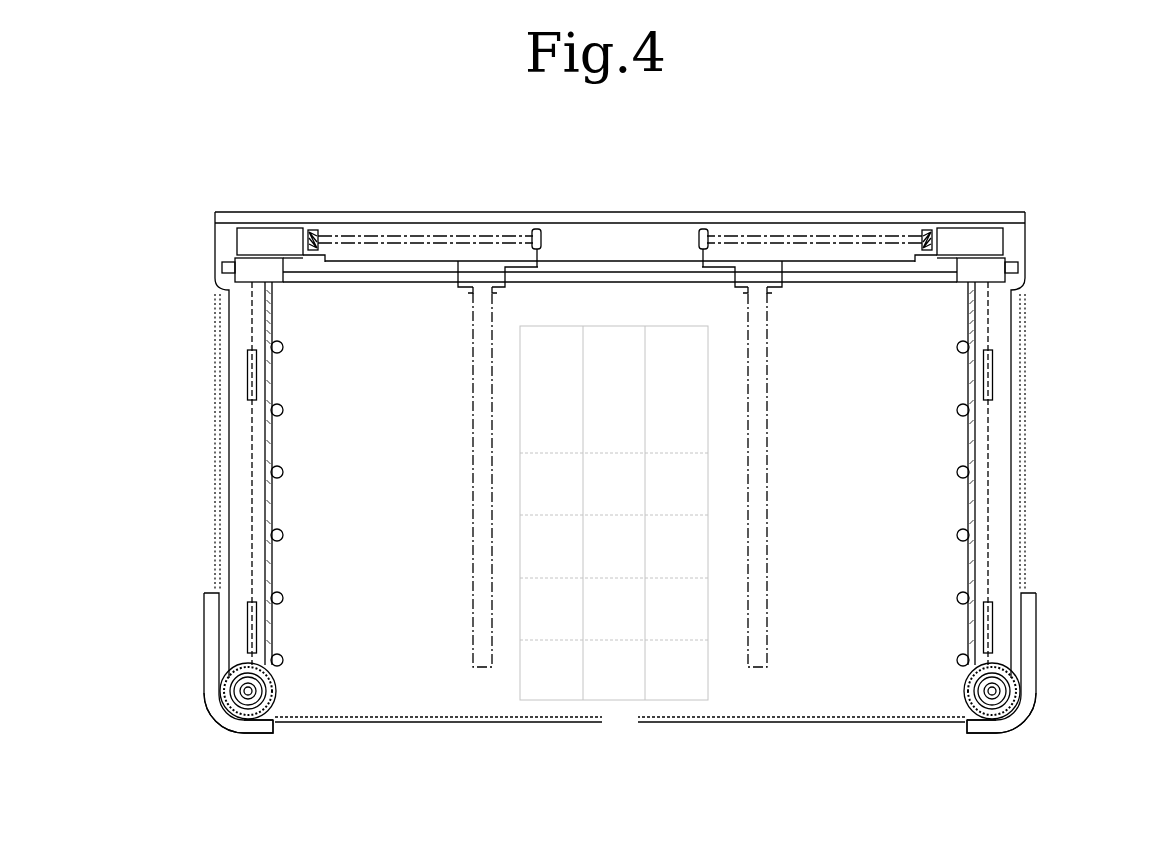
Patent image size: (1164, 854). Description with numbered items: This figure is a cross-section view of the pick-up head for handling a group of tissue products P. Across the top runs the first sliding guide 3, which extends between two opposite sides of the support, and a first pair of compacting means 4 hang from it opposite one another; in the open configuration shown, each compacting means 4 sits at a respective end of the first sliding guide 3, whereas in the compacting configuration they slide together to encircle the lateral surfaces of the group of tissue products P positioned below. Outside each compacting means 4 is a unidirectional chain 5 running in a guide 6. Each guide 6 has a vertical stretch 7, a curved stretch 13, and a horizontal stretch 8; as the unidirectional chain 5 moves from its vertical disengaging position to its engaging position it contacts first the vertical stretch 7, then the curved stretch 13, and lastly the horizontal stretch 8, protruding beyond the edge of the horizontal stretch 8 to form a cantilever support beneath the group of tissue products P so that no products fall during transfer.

The first sliding guide 3 is at (385, 268).
The group of tissue products P is at (620, 326).
The compacting means 4 is at (274, 463).
The unidirectional chains 5 is at (483, 722).
The guides 6 is at (192, 683).
The vertical stretch 7 is at (203, 609).
The horizontal stretch 8 is at (262, 733).
The curved stretch 13 is at (213, 720).